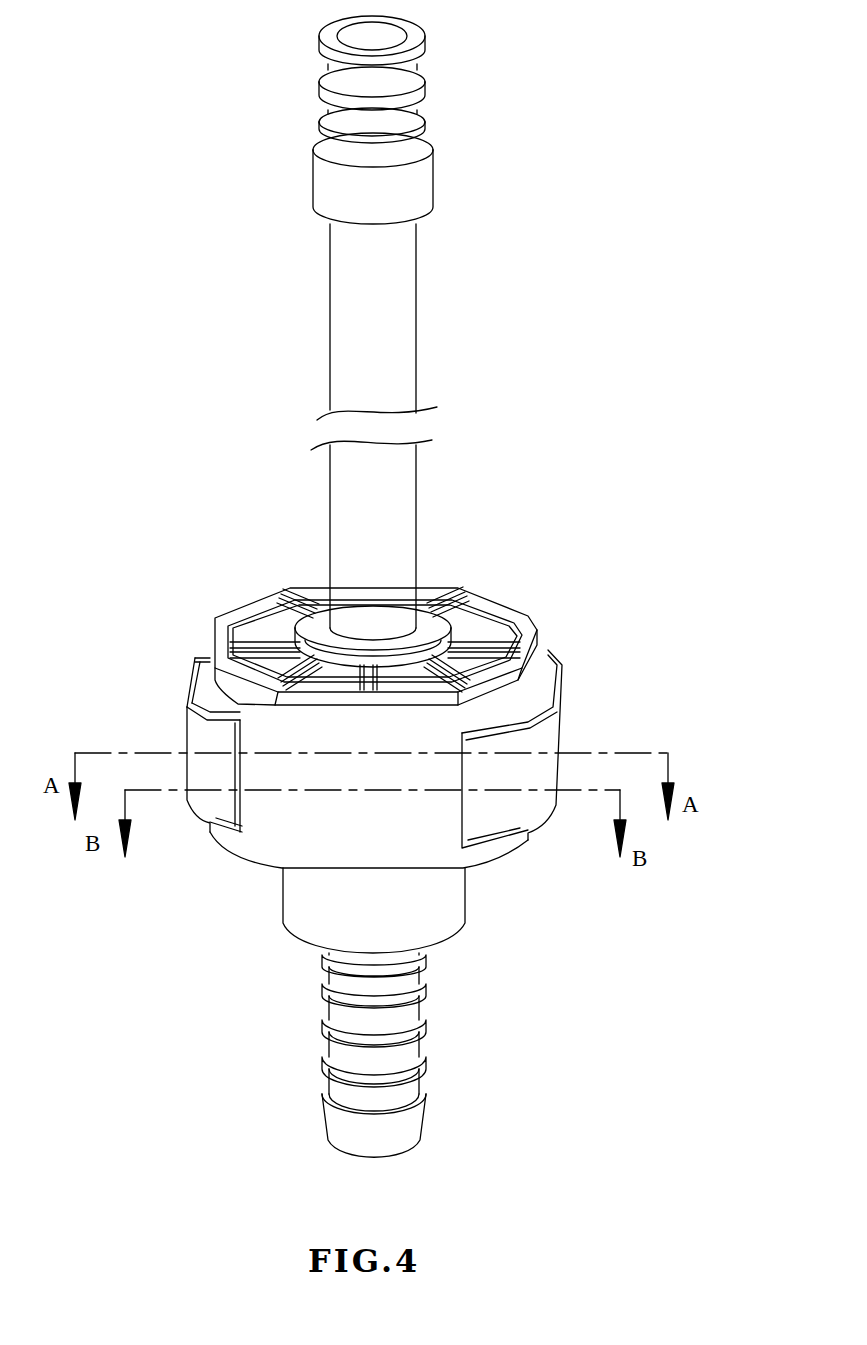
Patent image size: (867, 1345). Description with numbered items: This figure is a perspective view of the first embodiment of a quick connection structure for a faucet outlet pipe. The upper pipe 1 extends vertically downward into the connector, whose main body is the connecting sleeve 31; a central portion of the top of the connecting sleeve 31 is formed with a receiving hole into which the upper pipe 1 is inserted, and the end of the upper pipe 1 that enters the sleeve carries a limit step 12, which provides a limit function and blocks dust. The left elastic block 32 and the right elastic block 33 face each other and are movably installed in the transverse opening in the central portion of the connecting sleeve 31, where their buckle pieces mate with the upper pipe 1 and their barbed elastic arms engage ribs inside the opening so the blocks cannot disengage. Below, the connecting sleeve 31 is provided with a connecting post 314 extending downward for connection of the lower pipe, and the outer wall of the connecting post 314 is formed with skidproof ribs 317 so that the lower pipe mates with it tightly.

The upper pipe 1 is at (397, 333).
The limit step 12 is at (421, 618).
The connecting sleeve 31 is at (533, 618).
The left elastic block 32 is at (196, 656).
The right elastic block 33 is at (547, 665).
The connecting post 314 is at (413, 1063).
The skidproof ribs 317 is at (423, 988).